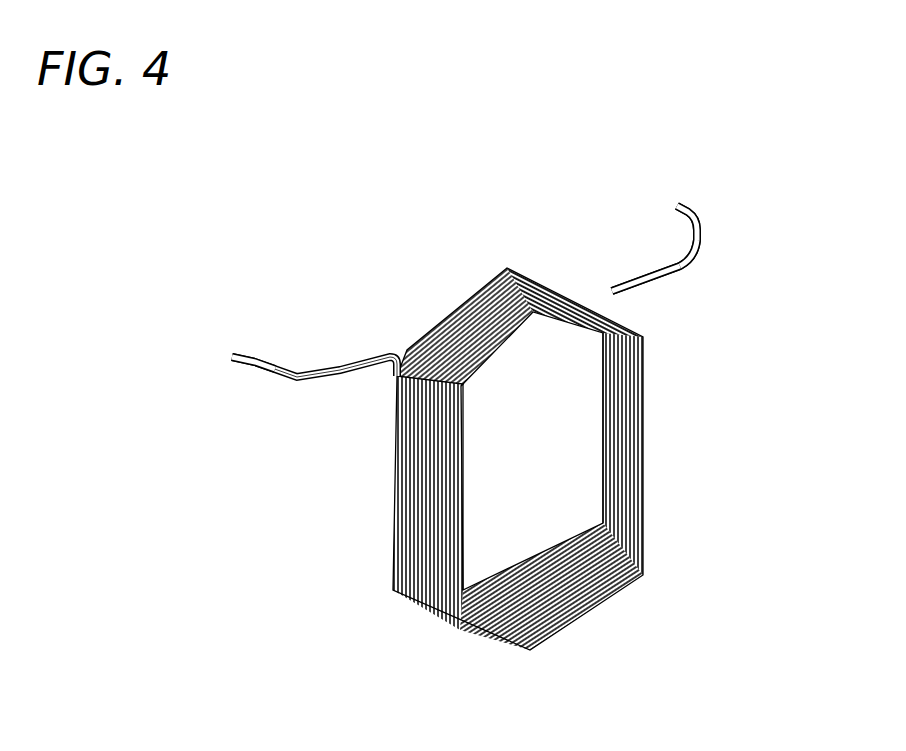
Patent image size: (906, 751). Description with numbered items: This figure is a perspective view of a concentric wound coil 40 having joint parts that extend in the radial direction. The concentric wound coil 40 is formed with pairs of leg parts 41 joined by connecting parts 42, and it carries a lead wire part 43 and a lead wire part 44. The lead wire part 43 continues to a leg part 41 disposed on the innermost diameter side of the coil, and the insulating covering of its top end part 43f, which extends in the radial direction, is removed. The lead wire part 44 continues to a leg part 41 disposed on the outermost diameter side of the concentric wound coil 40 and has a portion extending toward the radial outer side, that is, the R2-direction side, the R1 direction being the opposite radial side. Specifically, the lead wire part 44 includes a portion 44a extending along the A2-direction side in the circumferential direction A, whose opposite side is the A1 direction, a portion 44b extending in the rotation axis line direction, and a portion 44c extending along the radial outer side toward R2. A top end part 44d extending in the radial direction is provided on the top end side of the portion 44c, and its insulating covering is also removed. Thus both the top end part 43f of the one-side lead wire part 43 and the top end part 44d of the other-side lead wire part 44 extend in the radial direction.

The concentric wound coil 40 is at (302, 191).
The leg part 41 is at (402, 470).
The connecting part 42 is at (463, 302).
The lead wire part 43 is at (310, 323).
The top end part 43f is at (248, 355).
The lead wire part 44 is at (706, 230).
The portion 44a is at (652, 285).
The portion 44b is at (700, 250).
The portion 44c is at (697, 228).
The top end part 44d is at (672, 203).
The radial inner direction R1 is at (454, 656).
The radial outer direction R2 is at (393, 635).
The circumferential direction A is at (581, 667).
The first circumferential direction A1 is at (552, 697).
The second circumferential direction A2 is at (591, 695).